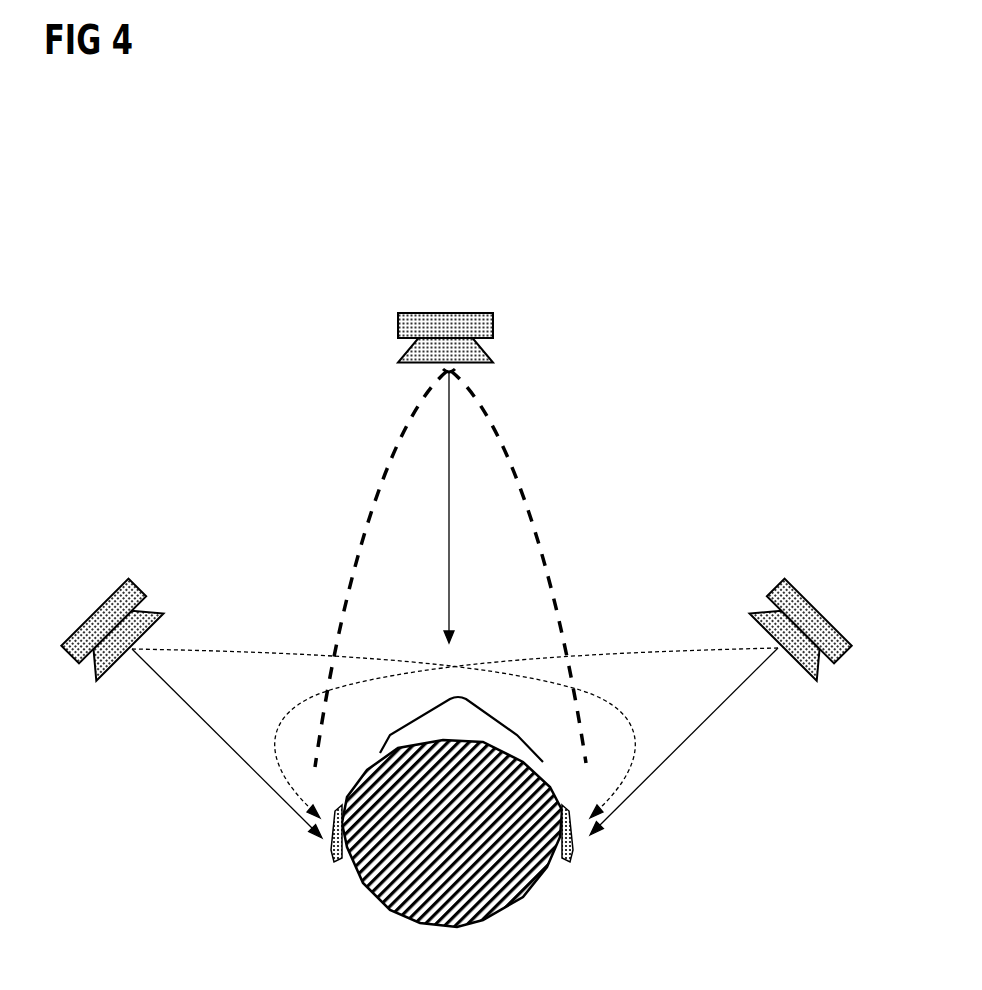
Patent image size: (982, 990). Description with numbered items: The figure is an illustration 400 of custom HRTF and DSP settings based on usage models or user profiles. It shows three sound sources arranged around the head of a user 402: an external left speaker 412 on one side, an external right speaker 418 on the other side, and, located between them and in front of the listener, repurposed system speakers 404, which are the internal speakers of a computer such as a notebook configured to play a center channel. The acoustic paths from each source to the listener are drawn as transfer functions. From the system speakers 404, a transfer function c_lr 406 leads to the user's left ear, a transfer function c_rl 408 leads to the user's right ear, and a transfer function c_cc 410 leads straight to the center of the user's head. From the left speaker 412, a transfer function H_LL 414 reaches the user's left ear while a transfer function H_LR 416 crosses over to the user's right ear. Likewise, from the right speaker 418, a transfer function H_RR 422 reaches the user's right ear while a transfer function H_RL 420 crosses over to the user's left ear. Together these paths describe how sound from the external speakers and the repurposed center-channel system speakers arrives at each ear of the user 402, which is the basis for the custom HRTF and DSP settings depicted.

The illustration 400 is at (797, 112).
The user 402 is at (353, 880).
The repurposed system speakers 404 is at (442, 313).
The transfer function c_lr 406 is at (373, 515).
The transfer function c_rl 408 is at (485, 427).
The transfer function c_cc 410 is at (447, 617).
The left speaker 412 is at (115, 578).
The transfer function H_LL 414 is at (245, 767).
The transfer function H_LR 416 is at (190, 643).
The right speaker 418 is at (790, 582).
The transfer function H_RL 420 is at (652, 642).
The transfer function H_RR 422 is at (643, 783).